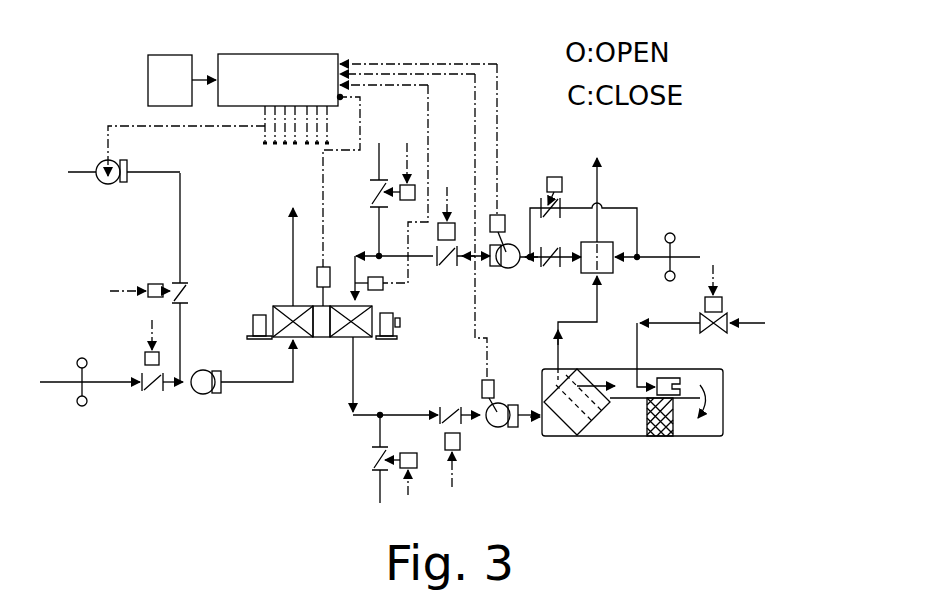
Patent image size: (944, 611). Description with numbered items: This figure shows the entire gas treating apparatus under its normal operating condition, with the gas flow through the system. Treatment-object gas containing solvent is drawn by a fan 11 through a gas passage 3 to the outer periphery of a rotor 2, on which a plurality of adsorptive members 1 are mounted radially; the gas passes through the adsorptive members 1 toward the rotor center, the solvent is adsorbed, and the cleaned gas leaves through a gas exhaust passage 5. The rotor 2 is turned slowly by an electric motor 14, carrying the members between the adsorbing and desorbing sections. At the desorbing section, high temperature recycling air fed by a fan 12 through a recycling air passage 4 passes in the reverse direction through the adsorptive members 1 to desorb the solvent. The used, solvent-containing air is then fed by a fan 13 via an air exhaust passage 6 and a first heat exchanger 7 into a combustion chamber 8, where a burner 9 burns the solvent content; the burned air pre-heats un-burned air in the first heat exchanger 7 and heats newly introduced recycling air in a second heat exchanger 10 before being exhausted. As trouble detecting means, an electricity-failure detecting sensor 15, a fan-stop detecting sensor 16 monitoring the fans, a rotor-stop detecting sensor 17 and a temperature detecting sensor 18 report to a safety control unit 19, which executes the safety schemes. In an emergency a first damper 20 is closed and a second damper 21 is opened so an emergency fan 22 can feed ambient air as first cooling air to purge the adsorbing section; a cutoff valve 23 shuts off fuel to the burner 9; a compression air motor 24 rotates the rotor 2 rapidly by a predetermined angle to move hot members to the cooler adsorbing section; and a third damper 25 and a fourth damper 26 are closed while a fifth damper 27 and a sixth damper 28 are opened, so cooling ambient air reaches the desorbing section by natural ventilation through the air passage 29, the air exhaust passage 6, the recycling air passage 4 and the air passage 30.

The adsorptive member 1 is at (285, 340).
The rotor 2 is at (321, 342).
The gas passage 3 is at (262, 383).
The recycling air passage 4 is at (372, 255).
The gas exhaust passage 5 is at (290, 222).
The air exhaust passage 6 is at (352, 400).
The first heat exchanger 7 is at (566, 437).
The combustion chamber 8 is at (628, 437).
The burner 9 is at (663, 378).
The second heat exchanger 10 is at (615, 270).
The fan 11 is at (203, 394).
The fan 12 is at (516, 268).
The fan 13 is at (500, 427).
The electric motor 14 is at (398, 336).
The electricity-failure detecting sensor 15 is at (170, 55).
The fan-stop detecting sensor 16 is at (497, 215).
The rotor-stop detecting sensor 17 is at (316, 276).
The temperature detecting sensor 18 is at (386, 289).
The safety control unit 19 is at (278, 54).
The first damper 20 is at (145, 376).
The second damper 21 is at (178, 284).
The emergency fan 22 is at (100, 182).
The cutoff valve 23 is at (722, 312).
The compression air motor 24 is at (256, 315).
The third damper 25 is at (465, 262).
The fourth damper 26 is at (438, 412).
The fifth damper 27 is at (380, 150).
The sixth damper 28 is at (372, 475).
The air passage 29 is at (376, 435).
The air passage 30 is at (380, 218).